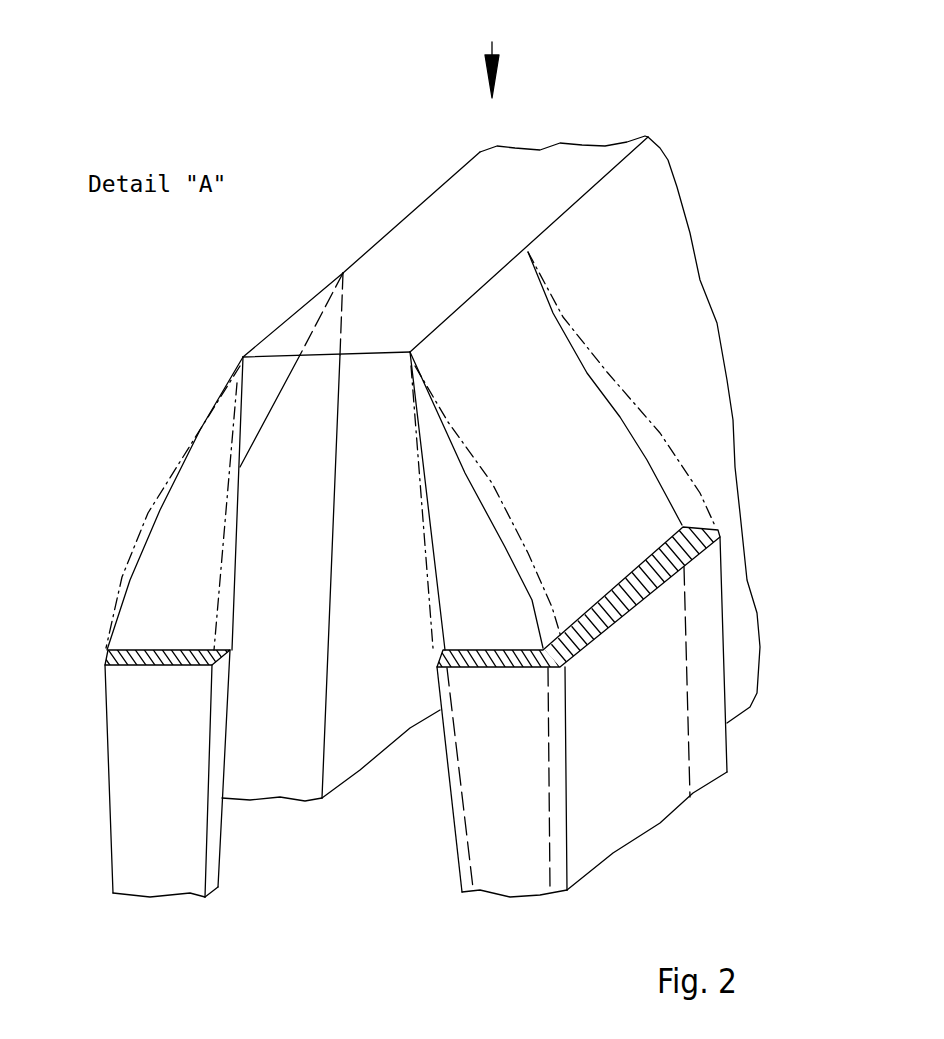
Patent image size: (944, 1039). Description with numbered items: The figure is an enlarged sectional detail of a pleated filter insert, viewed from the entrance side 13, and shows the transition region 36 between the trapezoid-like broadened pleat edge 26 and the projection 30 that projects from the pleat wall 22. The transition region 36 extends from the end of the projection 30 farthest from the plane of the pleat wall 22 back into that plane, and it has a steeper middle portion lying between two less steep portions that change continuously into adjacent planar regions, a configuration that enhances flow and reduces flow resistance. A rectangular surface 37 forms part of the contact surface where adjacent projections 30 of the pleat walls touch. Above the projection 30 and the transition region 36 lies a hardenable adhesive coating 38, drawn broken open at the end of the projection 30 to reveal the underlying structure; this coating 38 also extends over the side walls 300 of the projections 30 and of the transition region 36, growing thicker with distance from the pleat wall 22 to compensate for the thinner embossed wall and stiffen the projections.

The entrance side 13 is at (495, 52).
The pleat wall 22 is at (697, 319).
The trapezoid-like broadened pleat edge 26 is at (399, 240).
The projection 30 is at (637, 468).
The transition region 36 is at (463, 475).
The rectangular surface 37 is at (645, 812).
The hardenable adhesive coating 38 is at (713, 528).
The side walls 300 is at (462, 548).